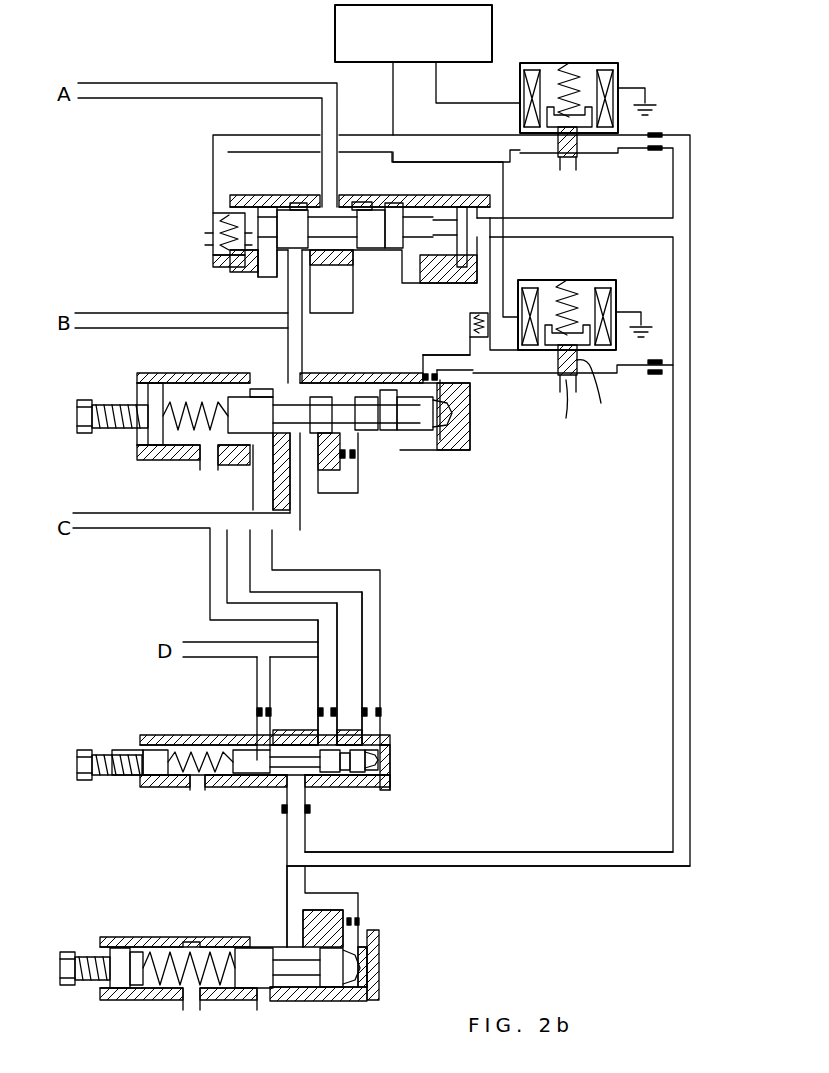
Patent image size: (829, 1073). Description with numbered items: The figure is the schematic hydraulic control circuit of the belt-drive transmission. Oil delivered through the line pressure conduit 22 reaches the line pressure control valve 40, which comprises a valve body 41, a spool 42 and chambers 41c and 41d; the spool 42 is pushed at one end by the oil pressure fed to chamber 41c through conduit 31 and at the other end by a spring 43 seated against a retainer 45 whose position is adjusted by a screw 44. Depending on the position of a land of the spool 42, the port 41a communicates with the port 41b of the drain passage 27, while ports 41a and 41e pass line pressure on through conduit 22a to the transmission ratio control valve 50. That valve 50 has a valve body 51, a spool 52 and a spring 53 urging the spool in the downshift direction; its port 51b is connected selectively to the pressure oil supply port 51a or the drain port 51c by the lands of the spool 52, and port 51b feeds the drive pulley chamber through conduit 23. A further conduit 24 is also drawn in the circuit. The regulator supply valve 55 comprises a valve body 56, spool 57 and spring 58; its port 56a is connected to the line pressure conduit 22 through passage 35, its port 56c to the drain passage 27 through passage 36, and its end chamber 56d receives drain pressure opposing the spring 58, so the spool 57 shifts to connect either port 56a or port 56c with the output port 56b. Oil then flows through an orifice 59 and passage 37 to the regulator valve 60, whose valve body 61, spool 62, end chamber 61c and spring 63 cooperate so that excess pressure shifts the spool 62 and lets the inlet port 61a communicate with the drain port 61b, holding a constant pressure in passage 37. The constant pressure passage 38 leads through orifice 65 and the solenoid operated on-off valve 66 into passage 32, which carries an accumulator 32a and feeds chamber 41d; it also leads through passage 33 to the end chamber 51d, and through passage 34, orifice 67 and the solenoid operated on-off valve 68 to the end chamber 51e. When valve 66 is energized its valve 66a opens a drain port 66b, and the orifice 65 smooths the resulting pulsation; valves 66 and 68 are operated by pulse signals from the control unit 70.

The line pressure conduit 22 is at (118, 516).
The conduit 22a is at (288, 300).
The conduit 23 is at (163, 84).
The line 24 is at (171, 322).
The drain passage 27 is at (184, 640).
The conduit 31 is at (343, 493).
The passage 32 is at (503, 367).
The accumulator 32a is at (465, 385).
The passage 33 is at (595, 220).
The passage 34 is at (433, 143).
The passage 35 is at (316, 676).
The passage 36 is at (257, 694).
The passage 37 is at (284, 880).
The constant pressure passage 38 is at (457, 854).
The line pressure control valve 40 is at (428, 478).
The valve body 41 is at (382, 385).
The port 41a is at (303, 482).
The port 41b is at (260, 453).
The chamber 41c is at (352, 450).
The chamber 41d is at (450, 440).
The port 41e is at (293, 388).
The spool 42 is at (322, 405).
The spring 43 is at (201, 400).
The screw 44 is at (84, 434).
The retainer 45 is at (156, 442).
The transmission ratio control valve 50 is at (439, 194).
The valve body 51 is at (370, 207).
The pressure oil supply port 51a is at (280, 277).
The port 51b is at (325, 203).
The drain port 51c is at (331, 281).
The end chamber 51d is at (395, 270).
The end chamber 51e is at (215, 216).
The spool 52 is at (274, 217).
The spring 53 is at (208, 215).
The regulator supply valve 55 is at (410, 778).
The valve body 56 is at (345, 790).
The port 56a is at (320, 727).
The output port 56b is at (285, 796).
The port 56c is at (261, 739).
The end chamber 56d is at (385, 758).
The spool 57 is at (241, 780).
The spring 58 is at (185, 780).
The orifice 59 is at (314, 813).
The regulator valve 60 is at (392, 956).
The valve body 61 is at (163, 995).
The inlet port 61a is at (284, 940).
The drain port 61b is at (275, 990).
The end chamber 61c is at (368, 992).
The spool 62 is at (254, 988).
The spring 63 is at (188, 950).
The orifice 65 is at (654, 377).
The solenoid operated on-off control valve 66 is at (607, 280).
The valve 66a is at (601, 389).
The drain port 66b is at (571, 409).
The orifice 67 is at (662, 132).
The solenoid operated on-off control valve 68 is at (618, 62).
The control unit 70 is at (492, 33).